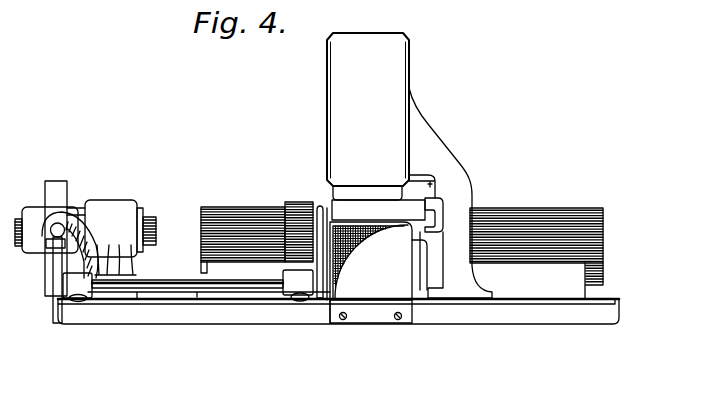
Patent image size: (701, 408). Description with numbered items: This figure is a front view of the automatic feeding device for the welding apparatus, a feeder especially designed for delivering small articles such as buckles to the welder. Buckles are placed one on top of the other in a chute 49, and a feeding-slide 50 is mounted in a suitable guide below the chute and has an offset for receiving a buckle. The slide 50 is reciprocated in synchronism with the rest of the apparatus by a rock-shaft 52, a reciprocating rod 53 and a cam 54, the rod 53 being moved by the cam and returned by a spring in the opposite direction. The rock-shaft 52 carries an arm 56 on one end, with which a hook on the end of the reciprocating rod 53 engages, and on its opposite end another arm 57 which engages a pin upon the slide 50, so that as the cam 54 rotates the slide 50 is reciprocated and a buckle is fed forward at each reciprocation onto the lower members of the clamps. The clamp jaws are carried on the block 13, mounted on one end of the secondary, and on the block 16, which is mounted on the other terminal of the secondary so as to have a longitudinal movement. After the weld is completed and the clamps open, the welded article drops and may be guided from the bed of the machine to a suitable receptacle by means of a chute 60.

The block 13 is at (211, 212).
The block 16 is at (561, 220).
The chute 49 is at (343, 190).
The feeding-slide 50 is at (375, 205).
The rock-shaft 52 is at (175, 281).
The reciprocating rod 53 is at (43, 222).
The cam 54 is at (57, 182).
The arm 56 is at (55, 266).
The arm 57 is at (317, 220).
The chute 60 is at (374, 296).